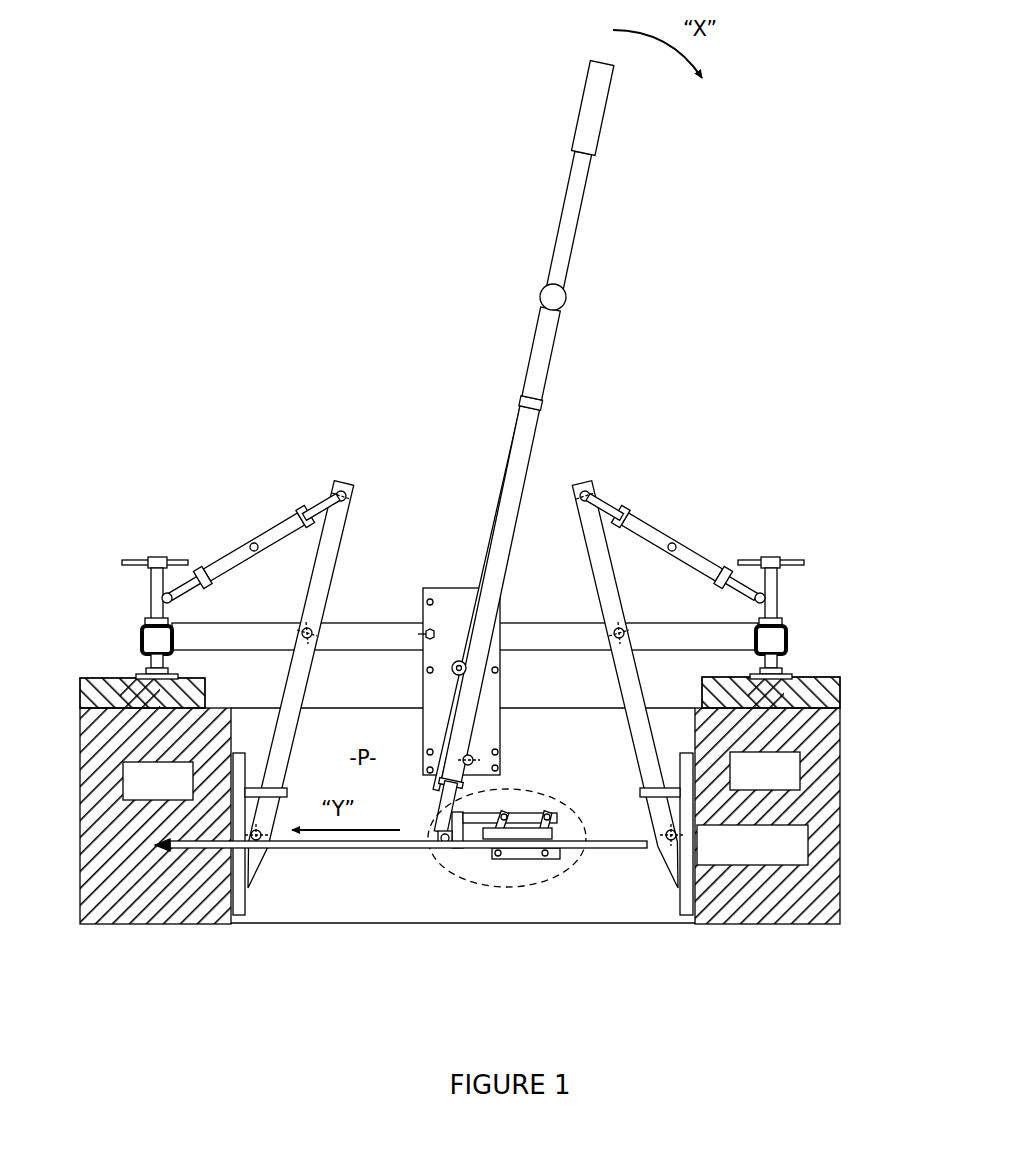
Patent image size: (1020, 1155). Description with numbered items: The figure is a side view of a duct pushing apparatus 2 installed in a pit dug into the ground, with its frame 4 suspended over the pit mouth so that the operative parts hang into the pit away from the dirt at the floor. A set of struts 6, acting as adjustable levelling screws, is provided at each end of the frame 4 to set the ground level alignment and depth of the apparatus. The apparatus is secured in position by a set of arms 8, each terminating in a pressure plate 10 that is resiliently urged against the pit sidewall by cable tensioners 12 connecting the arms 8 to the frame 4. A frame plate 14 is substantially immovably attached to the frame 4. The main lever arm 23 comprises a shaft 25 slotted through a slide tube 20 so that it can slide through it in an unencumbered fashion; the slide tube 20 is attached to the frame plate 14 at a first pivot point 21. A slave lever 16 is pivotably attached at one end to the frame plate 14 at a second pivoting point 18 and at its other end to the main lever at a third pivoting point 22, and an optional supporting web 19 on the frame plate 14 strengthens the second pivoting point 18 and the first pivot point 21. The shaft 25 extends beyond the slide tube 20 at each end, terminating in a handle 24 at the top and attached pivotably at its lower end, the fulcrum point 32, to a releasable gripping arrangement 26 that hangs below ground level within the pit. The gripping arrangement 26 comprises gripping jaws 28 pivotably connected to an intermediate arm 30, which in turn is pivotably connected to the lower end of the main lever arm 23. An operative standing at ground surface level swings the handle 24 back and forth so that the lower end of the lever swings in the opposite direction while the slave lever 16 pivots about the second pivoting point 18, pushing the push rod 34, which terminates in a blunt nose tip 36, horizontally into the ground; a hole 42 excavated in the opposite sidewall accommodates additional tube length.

The duct pushing apparatus 2 is at (396, 398).
The frame 4 is at (415, 622).
The struts 6 is at (778, 610).
The arms 8 is at (582, 545).
The pressure plate 10 is at (684, 900).
The cable tensioners 12 is at (252, 530).
The frame plate 14 is at (458, 588).
The slave lever 16 is at (490, 510).
The second pivoting point 18 is at (452, 672).
The supporting web 19 is at (462, 688).
The slide tube 20 is at (533, 470).
The first pivot point 21 is at (472, 762).
The third pivoting point 22 is at (566, 297).
The main lever arm 23 is at (516, 447).
The handle 24 is at (605, 120).
The shaft 25 is at (552, 368).
The gripping arrangement 26 is at (492, 862).
The gripping jaws 28 is at (550, 856).
The intermediate arm 30 is at (525, 808).
The fulcrum point 32 is at (437, 855).
The push rod 34 is at (290, 850).
The nose tip 36 is at (158, 848).
The hole 42 is at (116, 672).